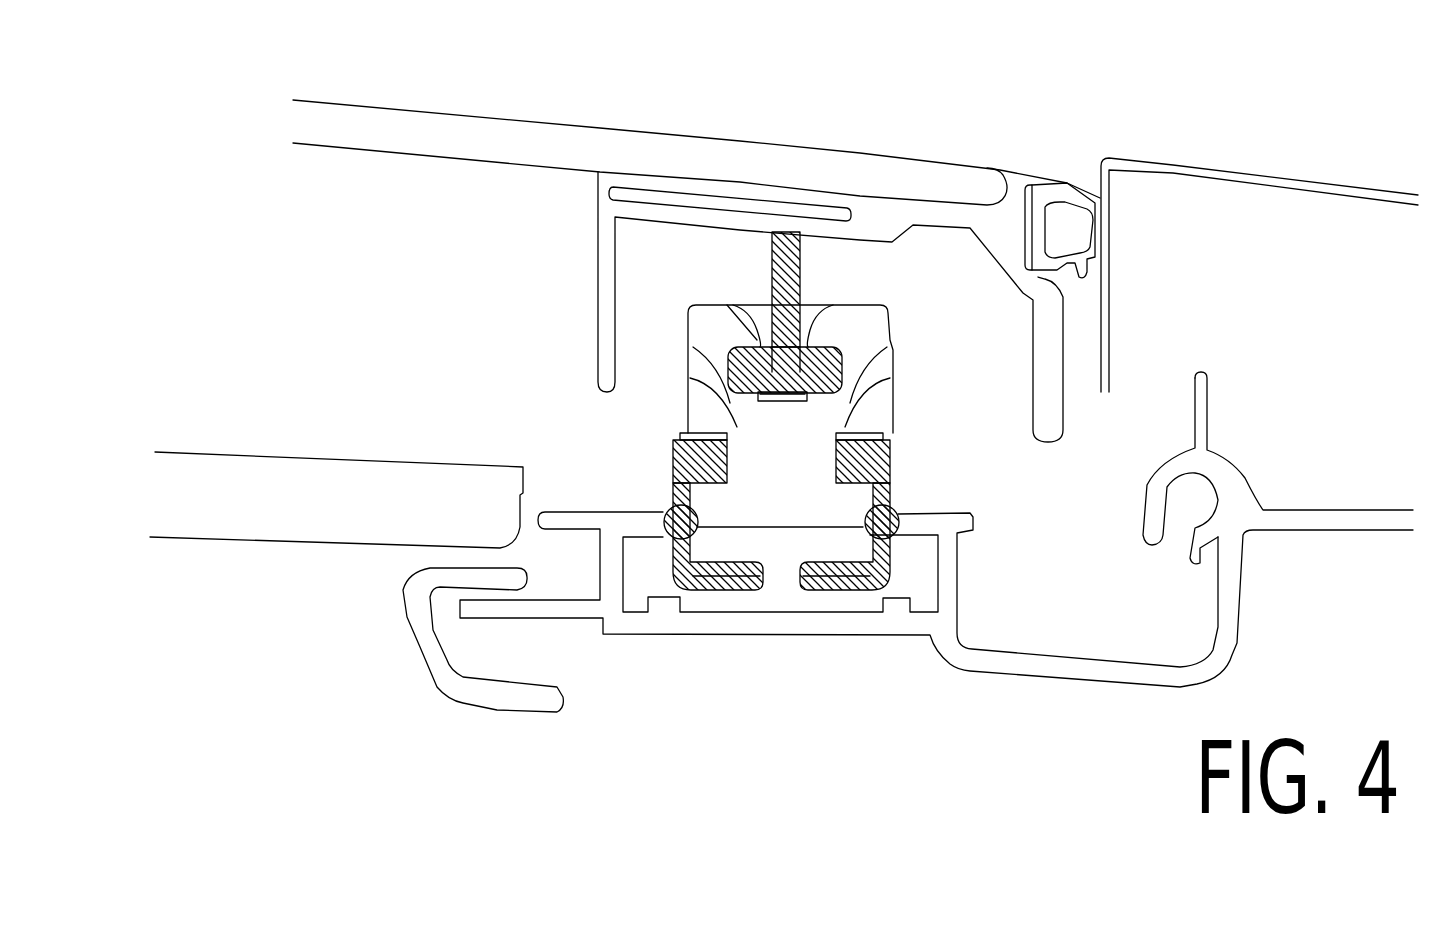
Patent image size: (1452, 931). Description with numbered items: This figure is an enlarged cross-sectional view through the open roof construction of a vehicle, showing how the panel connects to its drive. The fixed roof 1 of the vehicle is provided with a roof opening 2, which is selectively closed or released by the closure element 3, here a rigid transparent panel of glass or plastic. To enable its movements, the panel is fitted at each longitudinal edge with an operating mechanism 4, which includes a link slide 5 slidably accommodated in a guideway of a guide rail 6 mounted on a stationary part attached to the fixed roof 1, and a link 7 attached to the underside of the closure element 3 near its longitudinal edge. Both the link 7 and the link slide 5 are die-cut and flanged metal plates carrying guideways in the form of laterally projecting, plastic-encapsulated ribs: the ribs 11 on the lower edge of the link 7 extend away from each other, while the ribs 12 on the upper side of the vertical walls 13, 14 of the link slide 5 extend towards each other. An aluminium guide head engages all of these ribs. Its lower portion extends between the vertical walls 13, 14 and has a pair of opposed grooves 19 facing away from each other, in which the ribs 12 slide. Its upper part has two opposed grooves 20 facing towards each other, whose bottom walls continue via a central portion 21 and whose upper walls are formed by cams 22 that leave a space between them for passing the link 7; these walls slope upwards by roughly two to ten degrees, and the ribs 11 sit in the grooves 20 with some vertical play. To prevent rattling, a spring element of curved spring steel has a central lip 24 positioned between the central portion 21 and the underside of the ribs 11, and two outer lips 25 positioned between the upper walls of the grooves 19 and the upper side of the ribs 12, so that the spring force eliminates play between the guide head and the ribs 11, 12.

The fixed roof 1 is at (1173, 168).
The roof opening 2 is at (1094, 167).
The closure element 3 is at (525, 140).
The operating mechanism 4 is at (830, 648).
The link slide 5 is at (717, 603).
The guide rail 6 is at (853, 605).
The link 7 is at (810, 250).
The ribs 11 is at (747, 293).
The ribs 12 is at (673, 465).
The vertical wall 13 is at (873, 590).
The vertical wall 14 is at (667, 580).
The grooves 19 is at (700, 385).
The grooves 20 is at (707, 338).
The central portion 21 is at (763, 402).
The cams 22 is at (733, 323).
The central lip 24 is at (795, 402).
The outer lips 25 is at (690, 433).